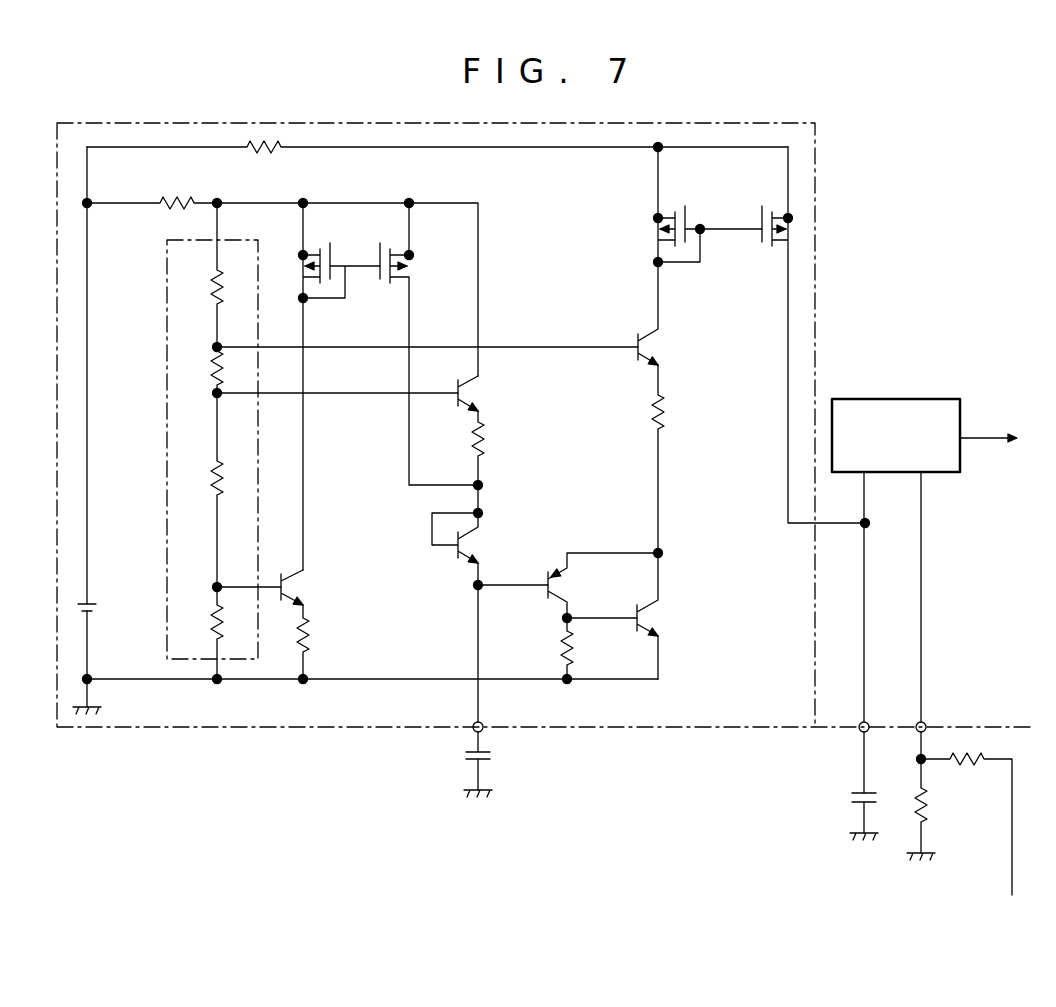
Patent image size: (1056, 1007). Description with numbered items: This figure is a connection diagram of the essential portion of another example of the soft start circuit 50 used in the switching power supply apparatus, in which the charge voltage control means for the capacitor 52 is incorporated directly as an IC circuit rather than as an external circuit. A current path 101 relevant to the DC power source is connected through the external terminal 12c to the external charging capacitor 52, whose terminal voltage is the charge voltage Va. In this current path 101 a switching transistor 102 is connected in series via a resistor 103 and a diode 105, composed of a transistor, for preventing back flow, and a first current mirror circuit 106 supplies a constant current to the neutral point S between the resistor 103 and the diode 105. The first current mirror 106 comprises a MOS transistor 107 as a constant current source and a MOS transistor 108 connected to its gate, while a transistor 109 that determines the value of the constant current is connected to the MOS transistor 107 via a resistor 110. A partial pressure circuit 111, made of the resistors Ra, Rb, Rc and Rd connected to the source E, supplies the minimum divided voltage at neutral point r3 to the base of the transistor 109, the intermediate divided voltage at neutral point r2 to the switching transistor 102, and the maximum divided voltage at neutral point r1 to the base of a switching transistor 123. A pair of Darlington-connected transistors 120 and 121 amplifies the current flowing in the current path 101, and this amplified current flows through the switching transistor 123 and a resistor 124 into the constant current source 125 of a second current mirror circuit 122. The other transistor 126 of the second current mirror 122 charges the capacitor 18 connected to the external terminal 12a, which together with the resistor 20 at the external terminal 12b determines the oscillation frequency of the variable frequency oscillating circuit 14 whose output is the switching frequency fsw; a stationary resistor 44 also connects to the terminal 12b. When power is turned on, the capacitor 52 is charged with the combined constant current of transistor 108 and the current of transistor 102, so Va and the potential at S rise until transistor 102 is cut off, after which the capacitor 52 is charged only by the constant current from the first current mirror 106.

The soft start circuit 50 is at (815, 272).
The partial pressure circuit 111 is at (182, 441).
The resistor Ra is at (216, 290).
The resistor Rb is at (216, 382).
The resistor Rc is at (216, 478).
The resistor Rd is at (216, 625).
The neutral point r1 is at (216, 346).
The connection neutral point r2 is at (216, 396).
The neutral point r3 is at (216, 586).
The reference voltage source E is at (93, 604).
The first current mirror circuit 106 is at (389, 385).
The MOS transistor 107 is at (330, 243).
The MOS transistor 108 is at (381, 243).
The switching transistor 102 is at (480, 386).
The resistor 103 is at (484, 440).
The neutral point S is at (508, 484).
The diode 105 is at (466, 536).
The current path 101 is at (478, 632).
The transistor 109 is at (300, 572).
The resistor 110 is at (308, 636).
The transistor 120 is at (560, 575).
The transistor 121 is at (655, 605).
The second current mirror circuit 122 is at (760, 333).
The switching transistor 123 is at (660, 336).
The resistor 124 is at (664, 412).
The constant current source 125 is at (693, 205).
The transistor 126 is at (752, 205).
The variable frequency oscillating circuit 14 is at (875, 399).
The switching frequency output fsw is at (977, 445).
The external terminal 12a is at (868, 722).
The external terminal 12b is at (925, 722).
The external terminal 12c is at (483, 722).
The charging capacitor 52 is at (492, 756).
The charge voltage Va is at (427, 762).
The capacitor 18 is at (860, 795).
The resistor 20 is at (925, 811).
The stationary resistor 44 is at (960, 756).